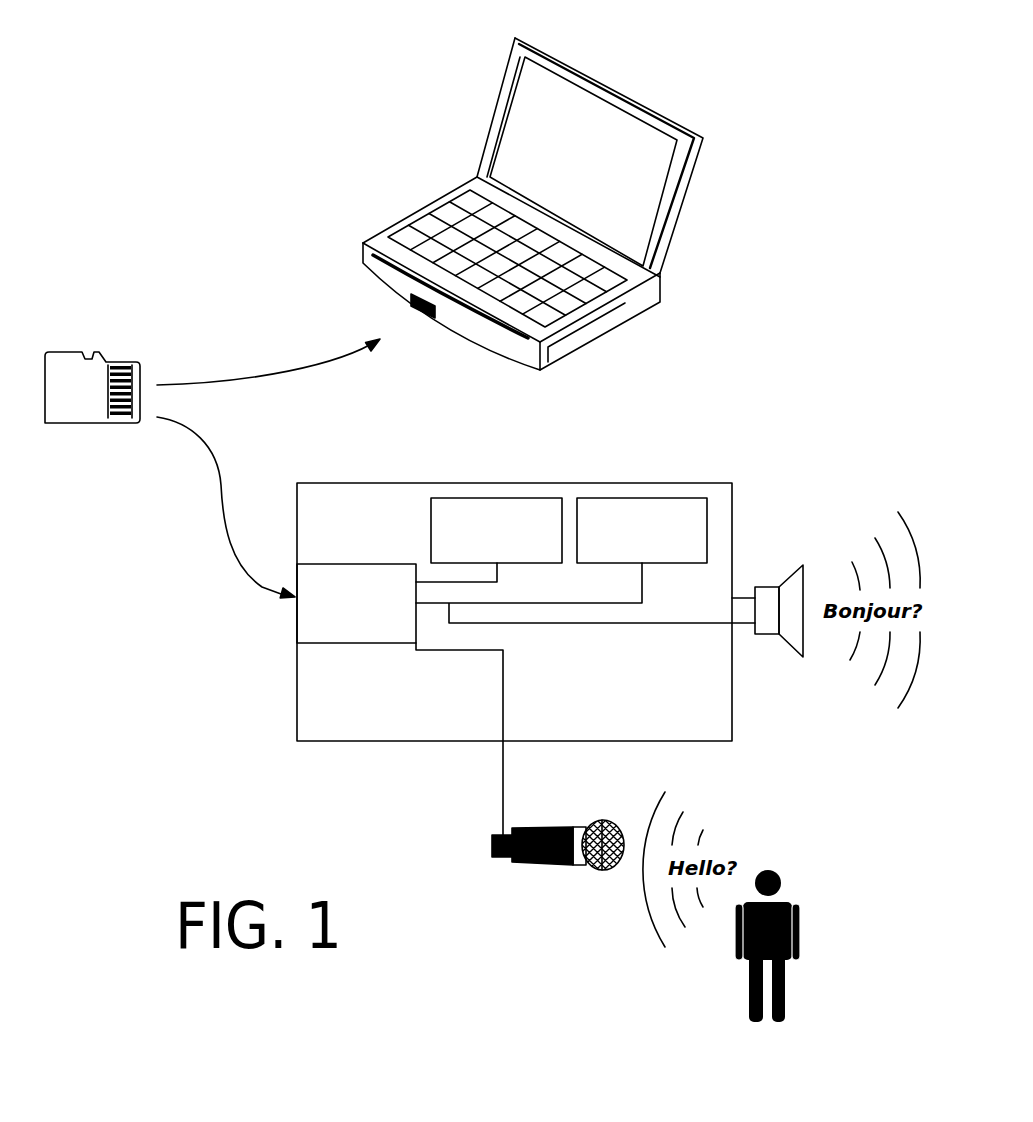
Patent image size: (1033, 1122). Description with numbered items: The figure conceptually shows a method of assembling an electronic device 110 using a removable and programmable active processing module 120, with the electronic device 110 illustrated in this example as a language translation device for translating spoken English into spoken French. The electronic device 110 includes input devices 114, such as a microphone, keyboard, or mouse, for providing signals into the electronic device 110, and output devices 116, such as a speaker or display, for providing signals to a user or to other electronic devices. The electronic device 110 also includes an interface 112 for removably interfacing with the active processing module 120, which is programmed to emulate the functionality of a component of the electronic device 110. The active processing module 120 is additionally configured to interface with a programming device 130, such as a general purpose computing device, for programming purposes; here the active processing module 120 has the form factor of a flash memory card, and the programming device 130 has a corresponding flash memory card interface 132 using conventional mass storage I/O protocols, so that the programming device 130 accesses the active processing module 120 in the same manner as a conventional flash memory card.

The electronic device 110 is at (297, 680).
The interface 112 is at (373, 613).
The input devices 114 is at (513, 543).
The output devices 116 is at (658, 543).
The active processing module 120 is at (98, 399).
The programming device 130 is at (473, 162).
The flash memory card interface 132 is at (410, 305).